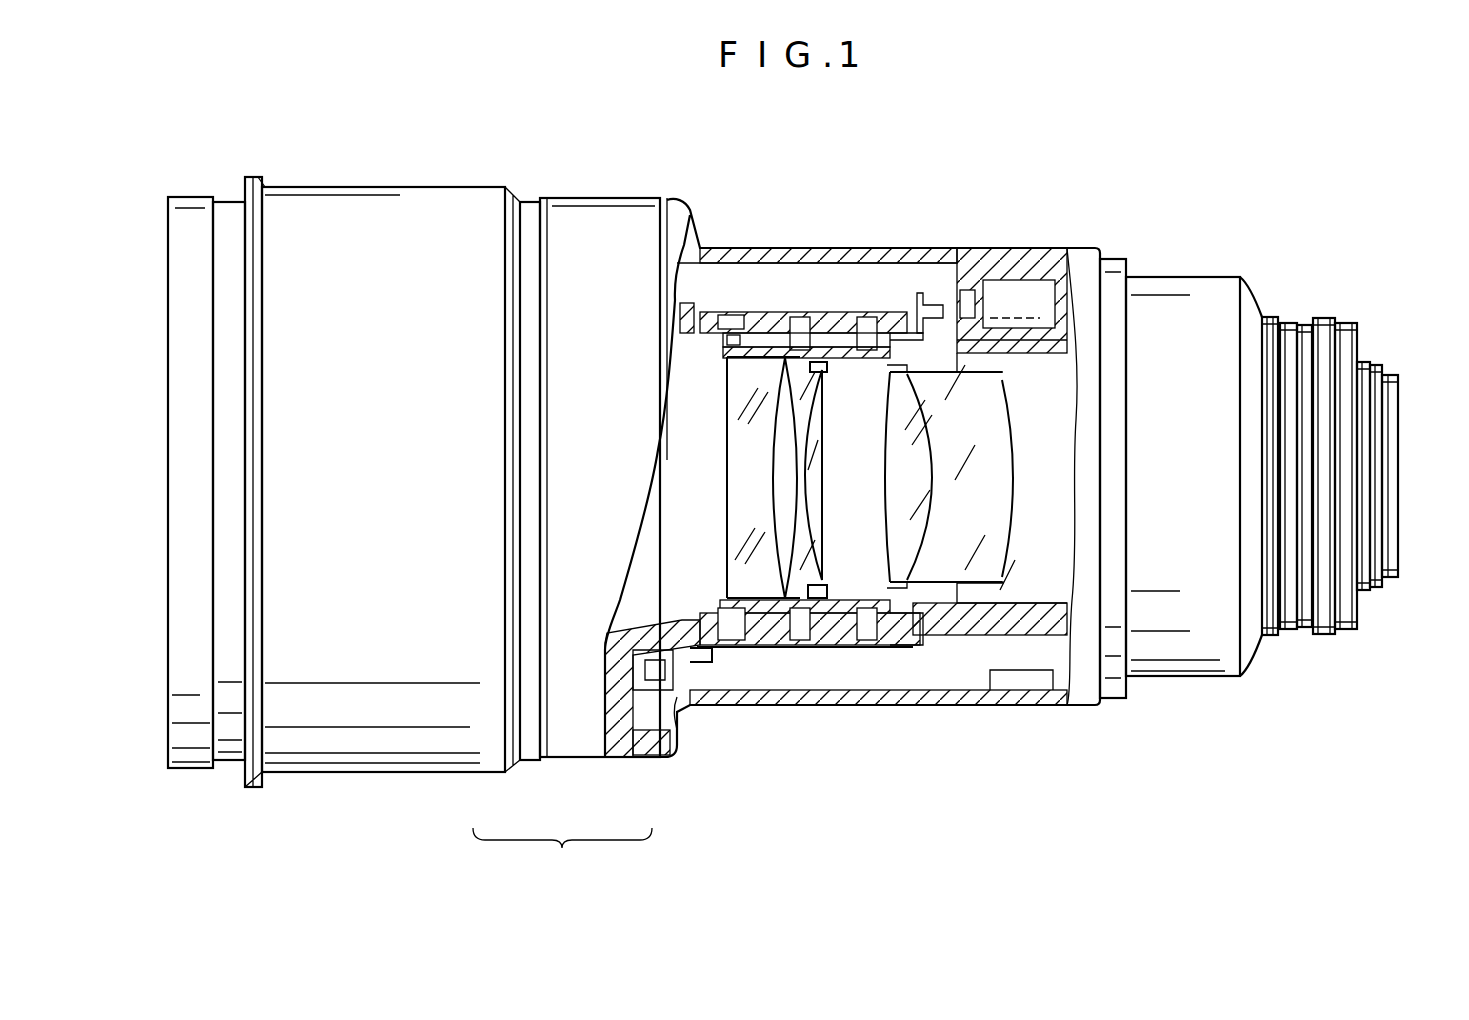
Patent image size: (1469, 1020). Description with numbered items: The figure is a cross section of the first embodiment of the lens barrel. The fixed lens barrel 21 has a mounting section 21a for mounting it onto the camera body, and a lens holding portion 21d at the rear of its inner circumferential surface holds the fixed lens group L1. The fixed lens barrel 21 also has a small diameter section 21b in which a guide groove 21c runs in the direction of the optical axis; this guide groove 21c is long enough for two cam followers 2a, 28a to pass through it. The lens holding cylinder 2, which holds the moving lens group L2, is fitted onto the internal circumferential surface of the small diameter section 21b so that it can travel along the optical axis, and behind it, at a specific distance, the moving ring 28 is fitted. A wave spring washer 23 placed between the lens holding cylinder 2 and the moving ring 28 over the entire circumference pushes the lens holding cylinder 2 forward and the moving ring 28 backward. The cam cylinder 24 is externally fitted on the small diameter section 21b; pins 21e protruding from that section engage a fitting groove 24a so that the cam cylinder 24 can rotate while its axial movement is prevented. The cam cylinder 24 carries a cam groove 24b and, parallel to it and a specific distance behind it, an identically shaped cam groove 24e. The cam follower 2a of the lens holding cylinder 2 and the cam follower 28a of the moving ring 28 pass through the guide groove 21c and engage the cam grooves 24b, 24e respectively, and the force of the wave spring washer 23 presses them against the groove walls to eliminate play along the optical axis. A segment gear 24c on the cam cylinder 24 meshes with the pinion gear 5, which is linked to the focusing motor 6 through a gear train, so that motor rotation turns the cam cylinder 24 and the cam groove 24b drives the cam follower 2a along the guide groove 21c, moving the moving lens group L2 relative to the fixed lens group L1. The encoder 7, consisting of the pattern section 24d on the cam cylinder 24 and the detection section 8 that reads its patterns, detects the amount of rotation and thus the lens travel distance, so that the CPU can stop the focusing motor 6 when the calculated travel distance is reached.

The fixed lens barrel 21 is at (603, 207).
The mounting section 21a is at (1387, 366).
The small diameter section 21b is at (1023, 635).
The guide groove 21c is at (840, 647).
The lens holding portion 21d is at (1053, 665).
The pins 21e is at (740, 647).
The lens holding cylinder 2 is at (780, 646).
The cam follower 2a is at (807, 646).
The wave spring washer 23 is at (840, 312).
The cam cylinder 24 is at (762, 312).
The fitting groove 24a is at (730, 312).
The cam groove 24b is at (800, 312).
The segment gear 24c is at (963, 623).
The pattern section 24d is at (640, 757).
The cam groove 24e is at (867, 312).
The moving ring 28 is at (903, 312).
The cam follower 28a is at (873, 652).
The pinion gear 5 is at (928, 293).
The focusing motor 6 is at (1033, 303).
The encoder 7 is at (562, 860).
The detection section 8 is at (560, 755).
The fixed lens group L1 is at (893, 437).
The moving lens group L2 is at (813, 540).